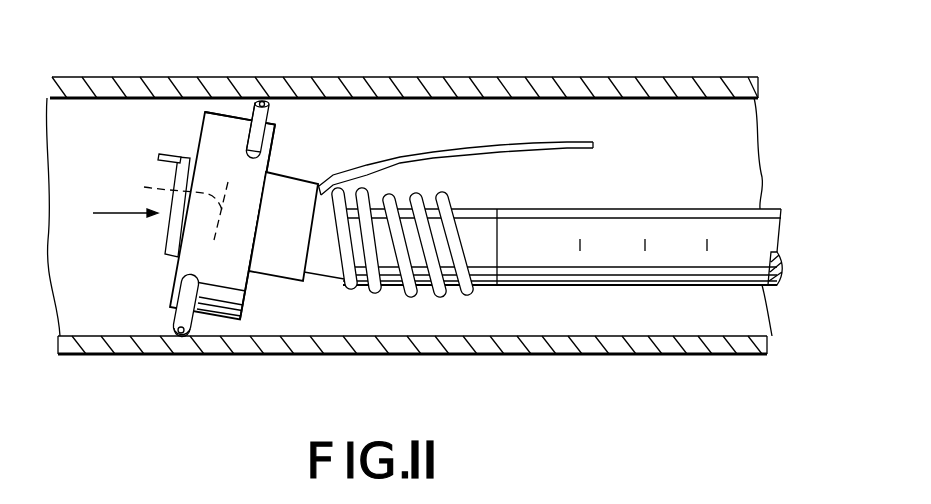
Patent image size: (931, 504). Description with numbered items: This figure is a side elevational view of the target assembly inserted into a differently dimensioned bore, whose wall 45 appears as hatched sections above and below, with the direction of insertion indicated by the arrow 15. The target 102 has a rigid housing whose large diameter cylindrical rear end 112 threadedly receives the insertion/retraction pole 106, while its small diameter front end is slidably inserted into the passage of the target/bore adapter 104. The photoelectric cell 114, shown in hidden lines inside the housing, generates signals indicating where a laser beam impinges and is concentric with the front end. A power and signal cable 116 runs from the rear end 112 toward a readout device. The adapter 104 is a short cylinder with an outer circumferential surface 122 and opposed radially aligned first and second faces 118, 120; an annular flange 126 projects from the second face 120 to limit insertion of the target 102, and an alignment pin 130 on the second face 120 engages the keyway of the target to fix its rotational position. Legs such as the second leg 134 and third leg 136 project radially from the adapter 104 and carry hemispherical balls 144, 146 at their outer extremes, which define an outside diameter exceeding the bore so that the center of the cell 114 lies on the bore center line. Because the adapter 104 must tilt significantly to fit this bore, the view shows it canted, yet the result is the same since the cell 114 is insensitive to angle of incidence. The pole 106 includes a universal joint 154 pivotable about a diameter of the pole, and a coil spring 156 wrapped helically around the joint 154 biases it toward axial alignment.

The direction arrow 15 is at (122, 215).
The conduit wall 45 is at (471, 77).
The target 102 is at (283, 293).
The target/bore adapter 104 is at (221, 106).
The insertion/retraction pole 106 is at (724, 204).
The large diameter cylindrical rear end 112 is at (295, 178).
The photoelectric cell 114 is at (153, 207).
The power and signal cable 116 is at (502, 148).
The first face 118 is at (276, 143).
The second face 120 is at (176, 279).
The outer circumferential surface 122 is at (231, 131).
The annular flange 126 is at (163, 176).
The alignment pin 130 is at (167, 154).
The second leg 134 is at (270, 104).
The third leg 136 is at (175, 322).
The second ball 144 is at (266, 101).
The third ball 146 is at (181, 335).
The universal joint 154 is at (453, 292).
The coil spring 156 is at (468, 291).